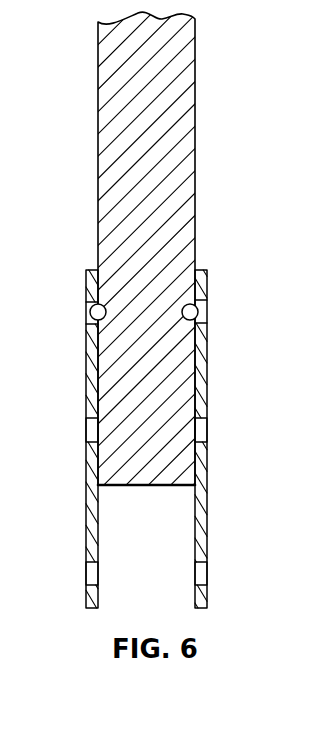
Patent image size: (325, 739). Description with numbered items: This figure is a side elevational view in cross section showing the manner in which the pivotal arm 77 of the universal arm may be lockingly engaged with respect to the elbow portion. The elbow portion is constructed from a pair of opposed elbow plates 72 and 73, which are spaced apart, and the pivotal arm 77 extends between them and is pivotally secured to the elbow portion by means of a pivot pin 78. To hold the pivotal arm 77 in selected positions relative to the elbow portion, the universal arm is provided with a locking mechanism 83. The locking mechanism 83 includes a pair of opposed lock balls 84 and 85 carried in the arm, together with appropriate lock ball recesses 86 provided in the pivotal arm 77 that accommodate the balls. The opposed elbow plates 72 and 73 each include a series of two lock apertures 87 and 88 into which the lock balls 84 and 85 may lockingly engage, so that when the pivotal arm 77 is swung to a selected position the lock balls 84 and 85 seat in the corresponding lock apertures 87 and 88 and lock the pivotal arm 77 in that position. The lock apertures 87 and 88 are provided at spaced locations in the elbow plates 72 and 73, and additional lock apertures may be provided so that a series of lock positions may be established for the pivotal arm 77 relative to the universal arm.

The pivotal arm 77 is at (188, 229).
The elbow plate 72 is at (207, 345).
The elbow plate 73 is at (86, 398).
The pivot pin 78 is at (205, 430).
The locking mechanism 83 is at (207, 313).
The lock ball 84 is at (207, 311).
The lock aperture 88 is at (204, 305).
The lock ball 85 is at (88, 313).
The lock ball recess 86 is at (88, 308).
The lock aperture 87 is at (88, 317).